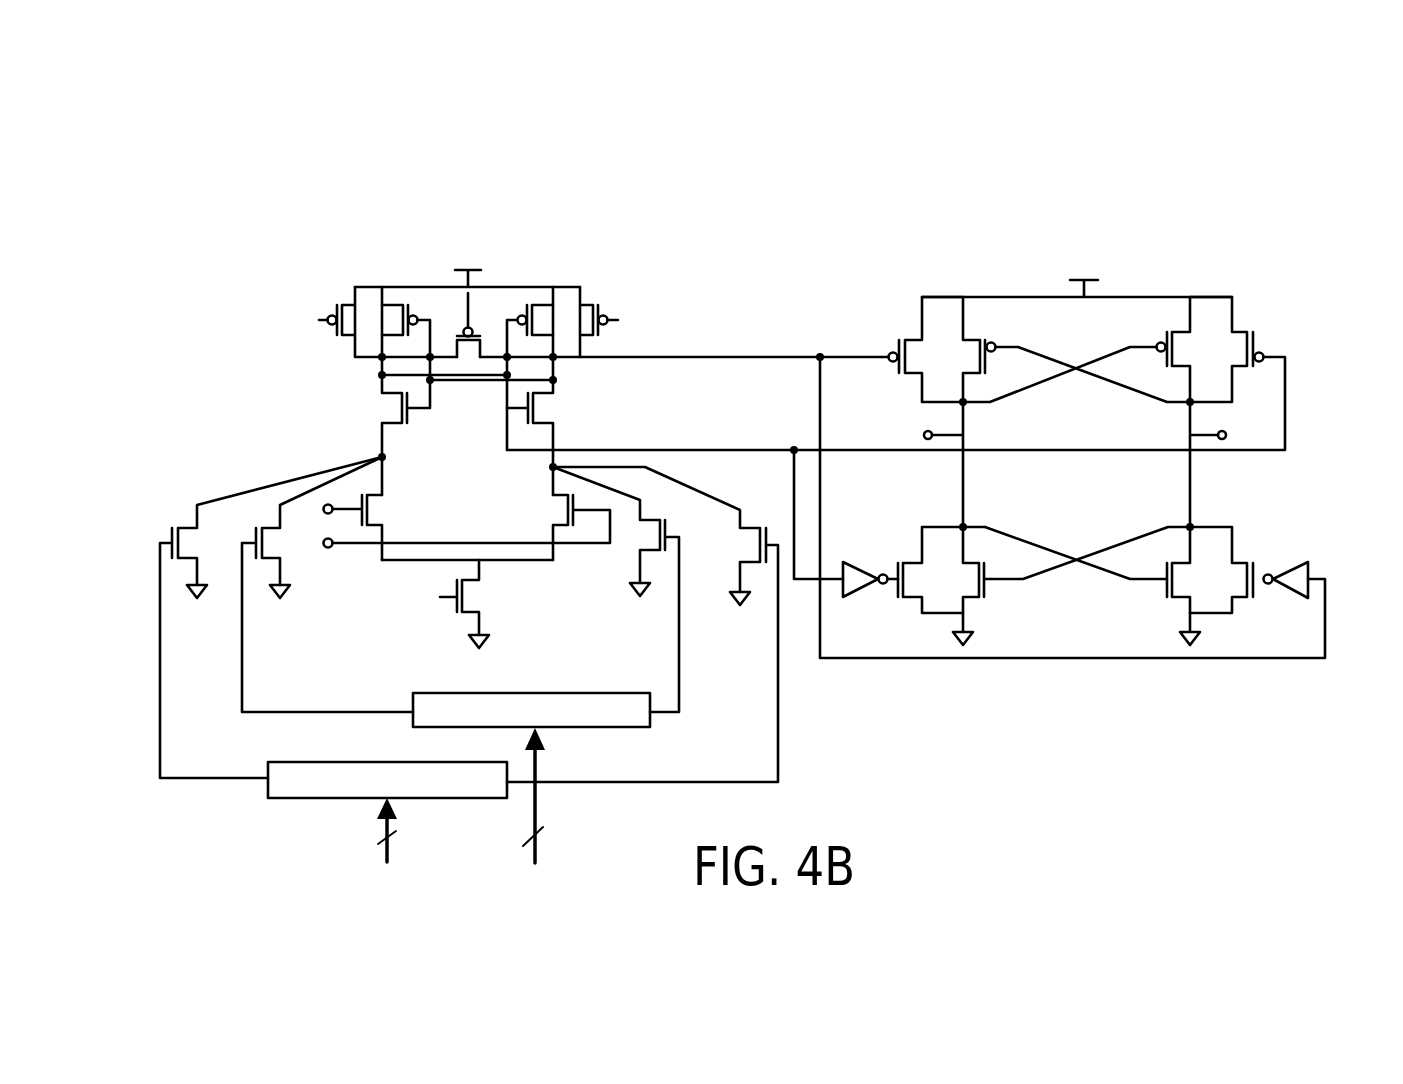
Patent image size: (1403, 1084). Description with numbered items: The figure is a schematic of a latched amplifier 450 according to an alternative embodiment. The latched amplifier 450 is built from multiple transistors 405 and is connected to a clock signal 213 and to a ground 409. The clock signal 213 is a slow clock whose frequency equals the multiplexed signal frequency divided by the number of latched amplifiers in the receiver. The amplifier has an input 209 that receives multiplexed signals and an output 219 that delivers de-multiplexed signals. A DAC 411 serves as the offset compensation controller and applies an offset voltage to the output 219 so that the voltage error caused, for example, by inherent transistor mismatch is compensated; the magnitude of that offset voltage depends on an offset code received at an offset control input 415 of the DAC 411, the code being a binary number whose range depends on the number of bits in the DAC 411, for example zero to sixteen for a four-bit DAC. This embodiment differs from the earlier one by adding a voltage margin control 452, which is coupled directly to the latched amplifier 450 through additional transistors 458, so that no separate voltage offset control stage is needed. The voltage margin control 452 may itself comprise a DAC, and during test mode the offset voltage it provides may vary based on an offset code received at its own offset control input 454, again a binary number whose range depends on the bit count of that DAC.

The latched amplifier 450 is at (1310, 232).
The clock signal 213 is at (287, 313).
The transistors 405 is at (982, 337).
The output 219 is at (900, 417).
The input 209 is at (326, 538).
The additional transistors 458 is at (168, 533).
The ground 409 is at (485, 641).
The DAC 411 is at (655, 718).
The voltage margin control 452 is at (268, 787).
The offset control input 454 is at (382, 848).
The offset control input 415 is at (532, 855).